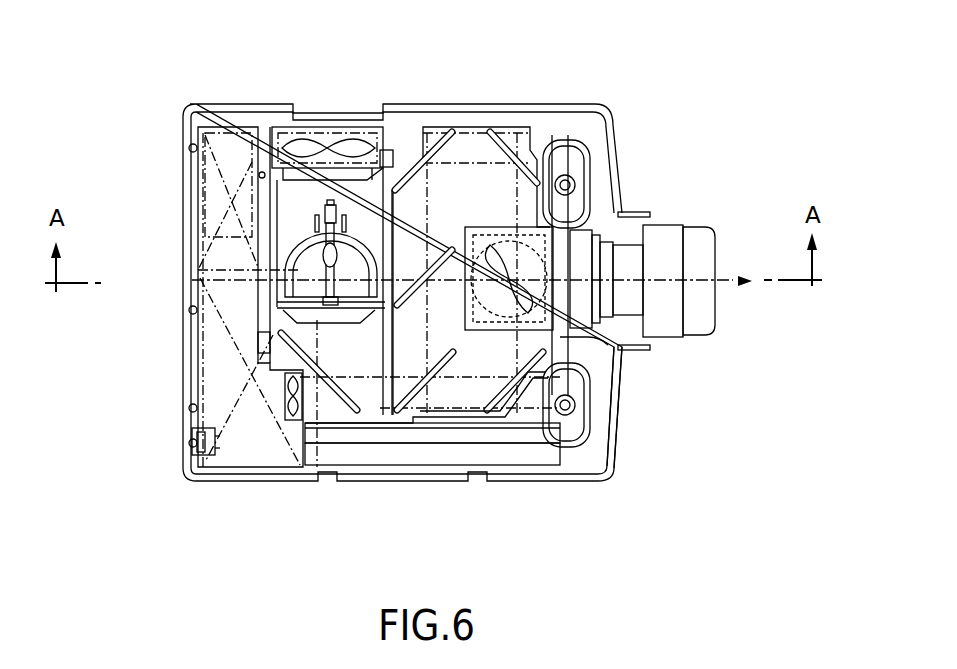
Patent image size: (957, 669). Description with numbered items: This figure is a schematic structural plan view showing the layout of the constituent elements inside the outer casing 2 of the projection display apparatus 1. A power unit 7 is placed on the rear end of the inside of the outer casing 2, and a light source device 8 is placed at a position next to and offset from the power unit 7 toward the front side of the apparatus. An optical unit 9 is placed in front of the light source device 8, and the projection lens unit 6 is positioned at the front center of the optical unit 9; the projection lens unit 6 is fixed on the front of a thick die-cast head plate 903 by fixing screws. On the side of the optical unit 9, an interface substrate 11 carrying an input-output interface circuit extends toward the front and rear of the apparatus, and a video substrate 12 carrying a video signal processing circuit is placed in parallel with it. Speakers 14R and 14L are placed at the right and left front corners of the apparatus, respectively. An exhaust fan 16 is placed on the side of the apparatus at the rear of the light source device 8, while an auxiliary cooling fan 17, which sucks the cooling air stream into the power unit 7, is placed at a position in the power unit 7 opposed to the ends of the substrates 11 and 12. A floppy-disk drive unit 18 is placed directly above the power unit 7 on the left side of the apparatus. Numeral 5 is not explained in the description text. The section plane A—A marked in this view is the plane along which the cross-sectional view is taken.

The projection display apparatus 1 is at (610, 55).
The outer casing 2 is at (183, 228).
The housing side wall 5 is at (618, 408).
The projection lens unit 6 is at (686, 217).
The power unit 7 is at (236, 376).
The light source device 8 is at (373, 226).
The optical unit 9 is at (490, 128).
The interface substrate 11 is at (520, 462).
The video substrate 12 is at (427, 443).
The speaker 14R is at (610, 138).
The speaker 14L is at (590, 437).
The exhaust fan 16 is at (280, 133).
The auxiliary cooling fan 17 is at (295, 422).
The floppy-disk drive unit 18 is at (204, 354).
The head plate 903 is at (620, 352).